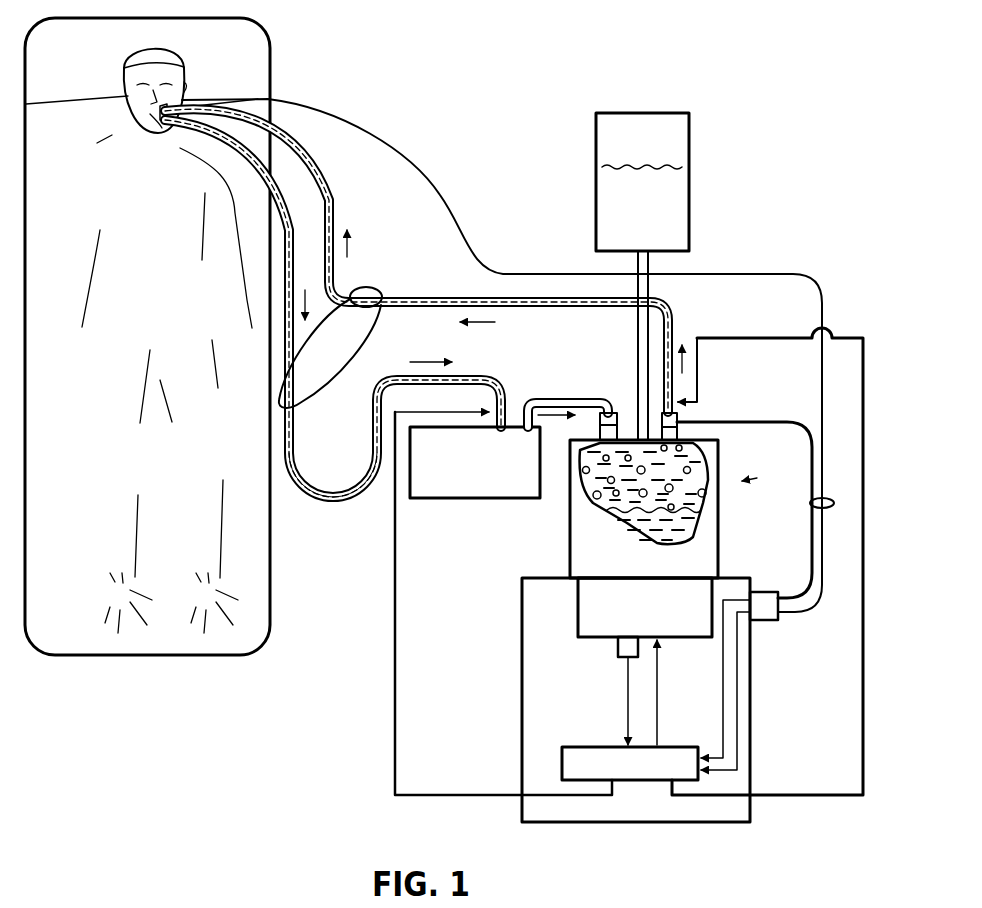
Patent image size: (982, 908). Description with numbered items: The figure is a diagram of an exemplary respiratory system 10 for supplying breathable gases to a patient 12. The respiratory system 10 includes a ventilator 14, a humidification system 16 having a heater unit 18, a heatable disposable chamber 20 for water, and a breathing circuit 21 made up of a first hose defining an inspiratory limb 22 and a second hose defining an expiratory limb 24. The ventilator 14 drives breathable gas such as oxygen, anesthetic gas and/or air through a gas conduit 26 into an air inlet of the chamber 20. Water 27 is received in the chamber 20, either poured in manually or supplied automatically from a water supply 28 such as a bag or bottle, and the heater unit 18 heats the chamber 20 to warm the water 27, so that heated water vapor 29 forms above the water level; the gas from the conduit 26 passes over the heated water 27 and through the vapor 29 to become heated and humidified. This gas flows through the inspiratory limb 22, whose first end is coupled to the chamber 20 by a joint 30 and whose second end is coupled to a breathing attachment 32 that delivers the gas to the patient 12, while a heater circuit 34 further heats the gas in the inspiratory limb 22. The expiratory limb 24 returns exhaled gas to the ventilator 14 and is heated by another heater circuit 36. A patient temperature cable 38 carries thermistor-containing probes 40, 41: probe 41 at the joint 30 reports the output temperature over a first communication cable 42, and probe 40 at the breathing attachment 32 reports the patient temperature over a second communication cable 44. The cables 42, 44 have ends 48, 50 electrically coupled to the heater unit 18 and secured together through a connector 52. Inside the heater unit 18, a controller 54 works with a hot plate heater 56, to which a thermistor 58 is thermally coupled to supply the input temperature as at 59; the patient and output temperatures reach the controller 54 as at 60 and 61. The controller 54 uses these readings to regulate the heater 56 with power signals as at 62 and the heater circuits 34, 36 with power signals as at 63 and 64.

The respiratory system 10 is at (796, 115).
The patient 12 is at (183, 72).
The ventilator 14 is at (498, 500).
The humidification system 16 is at (764, 478).
The heater unit 18 is at (520, 698).
The disposable chamber 20 is at (615, 558).
The breathing circuit 21 is at (372, 345).
The inspiratory limb 22 is at (331, 216).
The expiratory limb 24 is at (285, 425).
The gas conduit 26 is at (553, 398).
The water 27 is at (700, 511).
The water supply 28 is at (690, 205).
The heated water vapor 29 is at (628, 452).
The joint 30 is at (678, 418).
The breathing attachment 32 is at (157, 112).
The heater circuit 34 is at (390, 290).
The heater circuit 36 is at (332, 506).
The patient temperature cable 38 is at (833, 502).
The temperature probe 40 is at (160, 120).
The temperature probe 41 is at (678, 426).
The first communication cable 42 is at (745, 422).
The second communication cable 44 is at (505, 273).
The end of first communication cable 48 is at (795, 598).
The end of second communication cable 50 is at (780, 618).
The connector 52 is at (760, 620).
The controller 54 is at (562, 760).
The hot plate heater 56 is at (578, 590).
The thermistor 58 is at (618, 650).
The input temperature coupling 59 is at (627, 690).
The patient temperature coupling 60 is at (740, 718).
The output temperature coupling 61 is at (727, 720).
The power signal for heater 62 is at (660, 650).
The power signal for heater circuit 34 63 is at (790, 797).
The power signal for heater circuit 36 64 is at (395, 685).